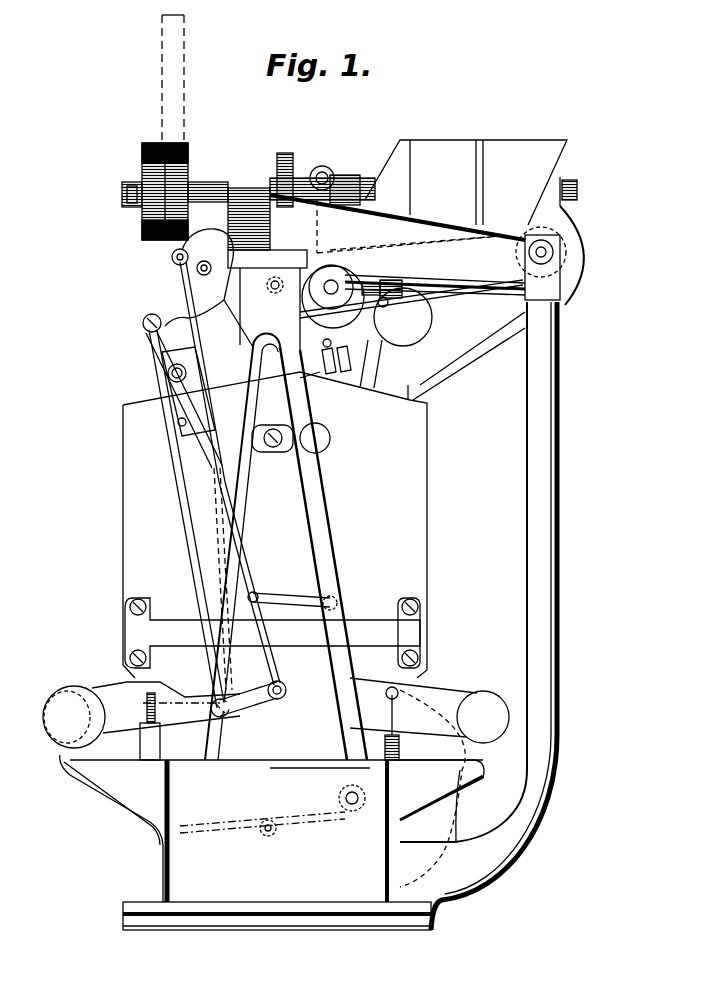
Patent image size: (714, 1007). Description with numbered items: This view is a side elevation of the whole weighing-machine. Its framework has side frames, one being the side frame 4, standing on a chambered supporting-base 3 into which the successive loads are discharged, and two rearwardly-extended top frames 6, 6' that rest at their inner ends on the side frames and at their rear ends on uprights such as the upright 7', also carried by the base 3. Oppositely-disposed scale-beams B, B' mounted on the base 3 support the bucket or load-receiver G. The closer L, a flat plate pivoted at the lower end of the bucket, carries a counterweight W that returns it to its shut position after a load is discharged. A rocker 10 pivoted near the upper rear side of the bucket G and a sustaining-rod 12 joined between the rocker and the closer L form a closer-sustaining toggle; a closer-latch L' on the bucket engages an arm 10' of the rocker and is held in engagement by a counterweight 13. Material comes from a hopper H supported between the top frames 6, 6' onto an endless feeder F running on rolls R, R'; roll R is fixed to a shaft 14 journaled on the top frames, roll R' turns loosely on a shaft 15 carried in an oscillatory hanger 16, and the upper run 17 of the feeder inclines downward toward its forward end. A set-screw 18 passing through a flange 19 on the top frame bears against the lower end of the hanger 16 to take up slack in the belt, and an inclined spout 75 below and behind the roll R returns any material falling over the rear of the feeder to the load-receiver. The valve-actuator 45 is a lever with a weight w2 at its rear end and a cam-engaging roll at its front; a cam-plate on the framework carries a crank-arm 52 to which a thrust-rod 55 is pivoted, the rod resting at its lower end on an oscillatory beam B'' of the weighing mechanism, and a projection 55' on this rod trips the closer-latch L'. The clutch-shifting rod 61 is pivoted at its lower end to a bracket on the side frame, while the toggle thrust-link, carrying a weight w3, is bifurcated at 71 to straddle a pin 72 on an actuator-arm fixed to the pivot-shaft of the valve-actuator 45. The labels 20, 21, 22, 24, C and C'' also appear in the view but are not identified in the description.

The chambered supporting-base 3 is at (245, 842).
The side frame 4 is at (336, 530).
The top frame 6 is at (267, 269).
The top frame 6' is at (454, 263).
The upright 7' is at (570, 483).
The rocker 10 is at (164, 391).
The arm 10' is at (185, 568).
The sustaining-rod 12 is at (177, 478).
The counterweight 13 is at (330, 437).
The shaft 14 is at (545, 252).
The shaft 15 is at (331, 280).
The oscillatory hanger 16 is at (333, 185).
The upper run 17 is at (420, 248).
The set-screw 18 is at (395, 282).
The flange 19 is at (385, 305).
The nut 20 is at (122, 194).
The belt 21 is at (186, 158).
The pulley 22 is at (143, 156).
The bearing 24 is at (285, 153).
The valve-actuator 45 is at (252, 539).
The crank-arm 52 is at (172, 260).
The thrust-rod 55 is at (237, 436).
The projection 55' is at (266, 534).
The clutch-shifting rod 61 is at (372, 381).
The bifurcated lower end 71 is at (330, 376).
The pin 72 is at (300, 378).
The spout 75 is at (482, 356).
The scale-beam B is at (141, 710).
The scale-beam B' is at (429, 708).
The oscillatory beam B'' is at (254, 706).
The column C is at (505, 568).
The cam C'' is at (414, 318).
The endless feeder F is at (478, 290).
The load-receiver G is at (275, 525).
The supply-hopper H is at (471, 182).
The closer L is at (272, 814).
The closer-latch L' is at (271, 468).
The roll R is at (435, 275).
The roll R' is at (371, 269).
The counterweight W is at (450, 810).
The weight w2 is at (417, 353).
The weight w3 is at (310, 318).